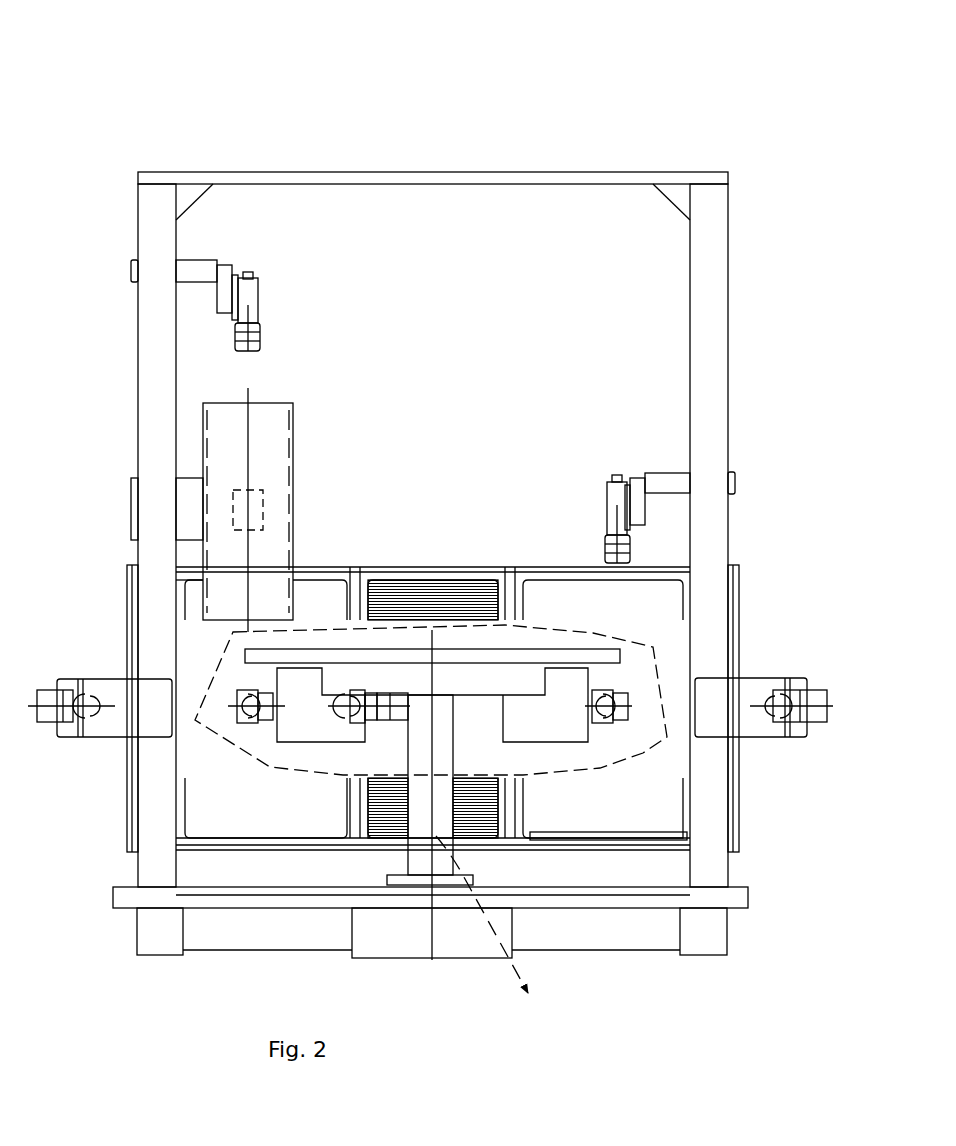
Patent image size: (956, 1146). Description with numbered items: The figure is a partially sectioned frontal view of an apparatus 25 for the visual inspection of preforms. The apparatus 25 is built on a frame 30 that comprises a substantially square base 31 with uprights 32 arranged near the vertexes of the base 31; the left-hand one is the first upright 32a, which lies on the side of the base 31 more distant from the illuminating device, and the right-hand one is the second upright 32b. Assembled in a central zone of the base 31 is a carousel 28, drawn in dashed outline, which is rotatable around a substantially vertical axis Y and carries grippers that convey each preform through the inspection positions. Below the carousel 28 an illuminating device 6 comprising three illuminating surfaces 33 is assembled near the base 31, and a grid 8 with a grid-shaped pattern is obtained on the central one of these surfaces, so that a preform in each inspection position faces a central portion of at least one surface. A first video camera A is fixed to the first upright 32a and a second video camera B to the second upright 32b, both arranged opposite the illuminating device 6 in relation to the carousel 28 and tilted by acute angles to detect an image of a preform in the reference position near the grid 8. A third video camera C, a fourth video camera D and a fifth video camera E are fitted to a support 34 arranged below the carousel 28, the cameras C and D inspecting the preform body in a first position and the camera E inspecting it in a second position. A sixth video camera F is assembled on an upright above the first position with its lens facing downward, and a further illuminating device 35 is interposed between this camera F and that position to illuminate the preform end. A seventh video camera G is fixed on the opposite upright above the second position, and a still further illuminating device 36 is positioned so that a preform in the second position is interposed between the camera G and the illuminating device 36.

The apparatus 25 is at (150, 124).
The frame 30 is at (120, 242).
The base 31 is at (136, 930).
The uprights 32 is at (730, 304).
The first upright 32a is at (136, 378).
The second upright 32b is at (725, 368).
The illuminating surfaces 33 is at (313, 553).
The further illuminating device 35 is at (293, 438).
The illuminating device 6 is at (370, 568).
The grid 8 is at (458, 585).
The carousel 28 is at (606, 626).
The support 34 is at (476, 698).
The still further illuminating device 36 is at (631, 835).
The sixth video camera F is at (262, 302).
The seventh video camera G is at (605, 520).
The first video camera A is at (42, 690).
The second video camera B is at (816, 690).
The third video camera C is at (233, 726).
The fourth video camera D is at (343, 724).
The fifth video camera E is at (613, 724).
The axis Y is at (491, 924).